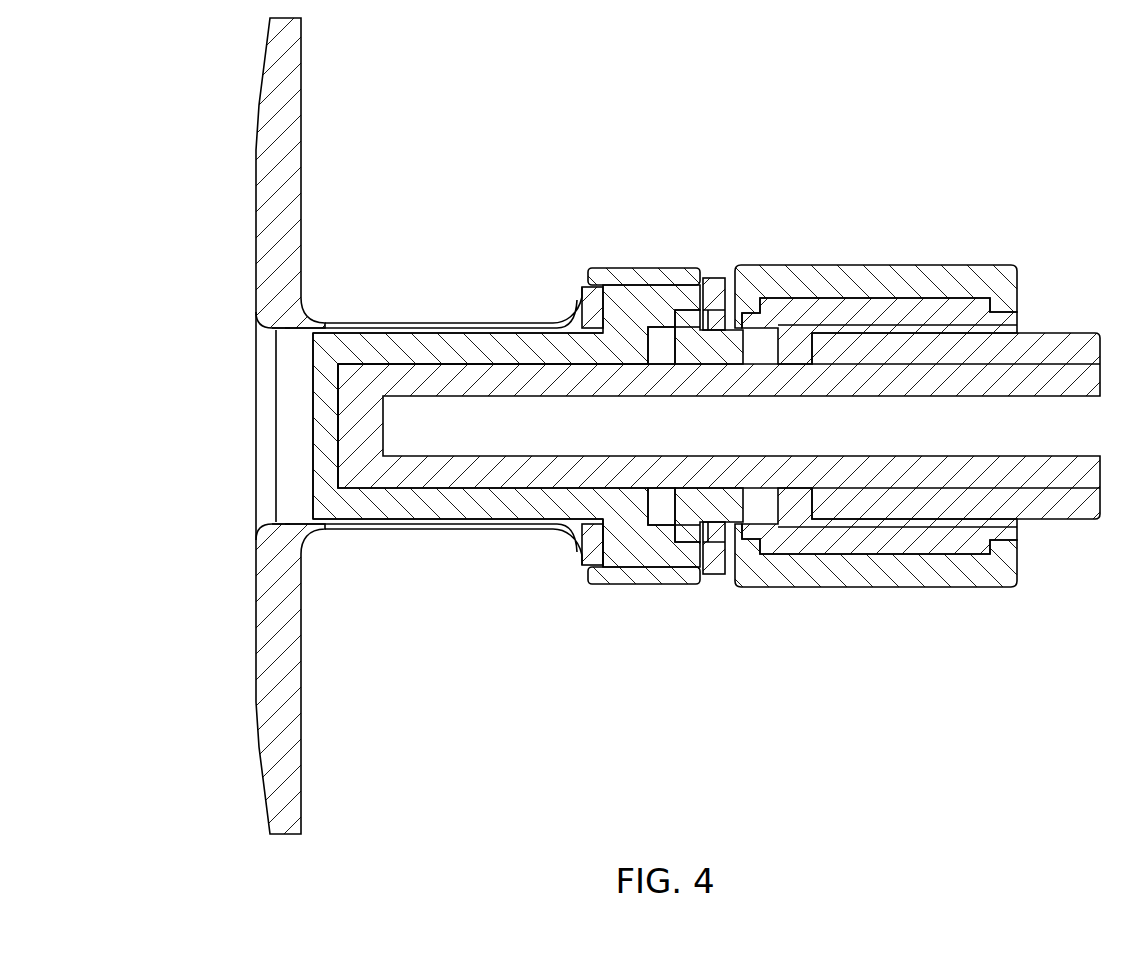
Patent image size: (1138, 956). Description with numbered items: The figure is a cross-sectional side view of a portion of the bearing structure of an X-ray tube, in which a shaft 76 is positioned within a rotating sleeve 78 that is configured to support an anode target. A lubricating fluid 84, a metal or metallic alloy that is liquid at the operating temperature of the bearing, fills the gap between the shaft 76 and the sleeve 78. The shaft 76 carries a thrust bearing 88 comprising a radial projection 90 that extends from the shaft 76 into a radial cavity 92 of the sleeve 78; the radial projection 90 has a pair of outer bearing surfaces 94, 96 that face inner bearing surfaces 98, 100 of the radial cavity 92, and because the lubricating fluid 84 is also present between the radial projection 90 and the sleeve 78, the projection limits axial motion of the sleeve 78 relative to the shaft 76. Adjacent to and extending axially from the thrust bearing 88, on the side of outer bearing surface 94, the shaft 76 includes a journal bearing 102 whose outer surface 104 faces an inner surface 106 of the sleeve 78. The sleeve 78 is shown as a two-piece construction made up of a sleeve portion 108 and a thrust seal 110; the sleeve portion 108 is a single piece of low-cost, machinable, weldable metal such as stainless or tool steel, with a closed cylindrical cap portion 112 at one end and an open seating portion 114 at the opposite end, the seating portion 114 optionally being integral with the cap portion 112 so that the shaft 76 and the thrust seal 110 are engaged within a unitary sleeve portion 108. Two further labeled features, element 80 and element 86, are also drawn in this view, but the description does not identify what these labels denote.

The shaft 76 is at (506, 474).
The sleeve 78 is at (487, 320).
The insert 80 is at (547, 455).
The lubricating fluid 84 is at (375, 468).
The body outer wall 86 is at (443, 497).
The thrust bearing 88 is at (632, 507).
The radial projection 90 is at (700, 502).
The radial cavity 92 is at (660, 533).
The outer bearing surface 94 is at (636, 330).
The outer bearing surface 96 is at (662, 300).
The inner bearing surface 98 is at (582, 289).
The inner bearing surface 100 is at (721, 347).
The journal bearing 102 is at (447, 348).
The outer surface 104 is at (396, 386).
The inner surface 106 is at (262, 318).
The sleeve portion 108 is at (524, 346).
The thrust seal 110 is at (799, 264).
The cap portion 112 is at (582, 527).
The seating portion 114 is at (622, 292).